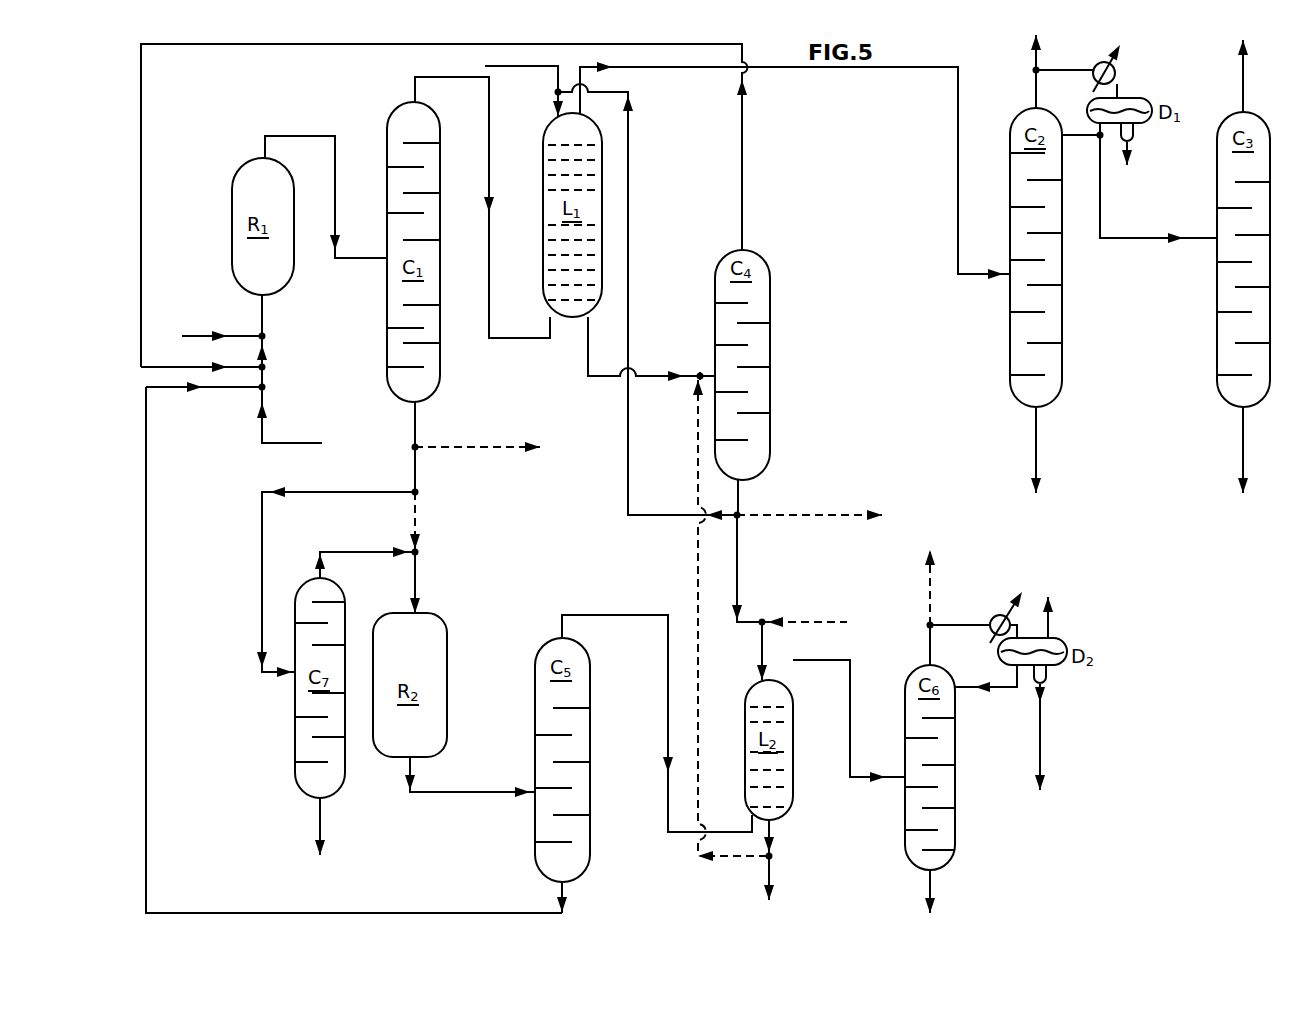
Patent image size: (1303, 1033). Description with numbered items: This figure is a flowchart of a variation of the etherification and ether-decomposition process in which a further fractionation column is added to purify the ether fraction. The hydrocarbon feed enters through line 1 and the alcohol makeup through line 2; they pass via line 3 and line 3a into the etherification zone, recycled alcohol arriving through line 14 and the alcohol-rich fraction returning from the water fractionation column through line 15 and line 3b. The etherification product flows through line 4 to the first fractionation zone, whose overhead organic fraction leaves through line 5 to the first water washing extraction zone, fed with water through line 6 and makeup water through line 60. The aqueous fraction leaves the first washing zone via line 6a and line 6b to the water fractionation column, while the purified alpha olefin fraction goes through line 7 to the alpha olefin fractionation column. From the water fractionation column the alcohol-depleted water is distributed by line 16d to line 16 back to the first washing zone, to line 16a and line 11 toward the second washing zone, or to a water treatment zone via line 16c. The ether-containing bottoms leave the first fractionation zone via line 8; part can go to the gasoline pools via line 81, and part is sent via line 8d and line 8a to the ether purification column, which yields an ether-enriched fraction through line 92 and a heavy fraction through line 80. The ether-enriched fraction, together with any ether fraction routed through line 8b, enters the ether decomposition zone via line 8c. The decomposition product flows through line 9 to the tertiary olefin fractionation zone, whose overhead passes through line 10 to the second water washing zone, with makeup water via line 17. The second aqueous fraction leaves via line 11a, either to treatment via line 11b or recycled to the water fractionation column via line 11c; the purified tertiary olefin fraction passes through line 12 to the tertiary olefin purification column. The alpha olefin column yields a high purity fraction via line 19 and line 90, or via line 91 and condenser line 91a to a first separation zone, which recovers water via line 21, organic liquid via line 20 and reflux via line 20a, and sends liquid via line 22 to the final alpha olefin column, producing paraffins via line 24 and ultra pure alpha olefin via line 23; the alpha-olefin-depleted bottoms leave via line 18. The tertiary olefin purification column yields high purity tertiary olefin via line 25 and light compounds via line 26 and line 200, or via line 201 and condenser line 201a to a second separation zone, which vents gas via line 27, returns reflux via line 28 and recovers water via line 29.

The line 1 is at (202, 332).
The line 2 is at (258, 430).
The line 3 is at (263, 380).
The line 3a is at (263, 352).
The line 3b is at (263, 320).
The line 4 is at (328, 135).
The line 5 is at (415, 90).
The line 6 is at (556, 102).
The line 6a is at (603, 377).
The line 6b is at (708, 372).
The line 7 is at (682, 68).
The line 8 is at (417, 417).
The line 8a is at (378, 490).
The line 8b is at (418, 512).
The line 8c is at (417, 570).
The line 8d is at (417, 460).
The line 9 is at (487, 792).
The line 10 is at (632, 613).
The line 11 is at (760, 646).
The line 11a is at (778, 830).
The line 11b is at (778, 870).
The line 11c is at (725, 857).
The line 12 is at (863, 778).
The line 14 is at (146, 517).
The line 15 is at (141, 95).
The line 16 is at (630, 178).
The line 16a is at (738, 567).
The line 16c is at (848, 514).
The line 16d is at (740, 503).
The line 17 is at (832, 622).
The line 18 is at (1036, 448).
The line 19 is at (1036, 88).
The line 20 is at (1101, 136).
The line 20a is at (1088, 136).
The line 21 is at (1130, 148).
The line 22 is at (1165, 240).
The line 23 is at (1242, 447).
The line 24 is at (1245, 93).
The line 25 is at (933, 877).
The line 26 is at (932, 646).
The line 27 is at (1055, 624).
The line 28 is at (1002, 688).
The line 29 is at (1043, 720).
The line 60 is at (540, 70).
The line 80 is at (317, 827).
The line 81 is at (483, 447).
The line 90 is at (1036, 50).
The line 91 is at (1085, 70).
The line 91a is at (1120, 80).
The line 92 is at (370, 550).
The line 200 is at (930, 592).
The line 201 is at (970, 622).
The line 201a is at (1020, 625).